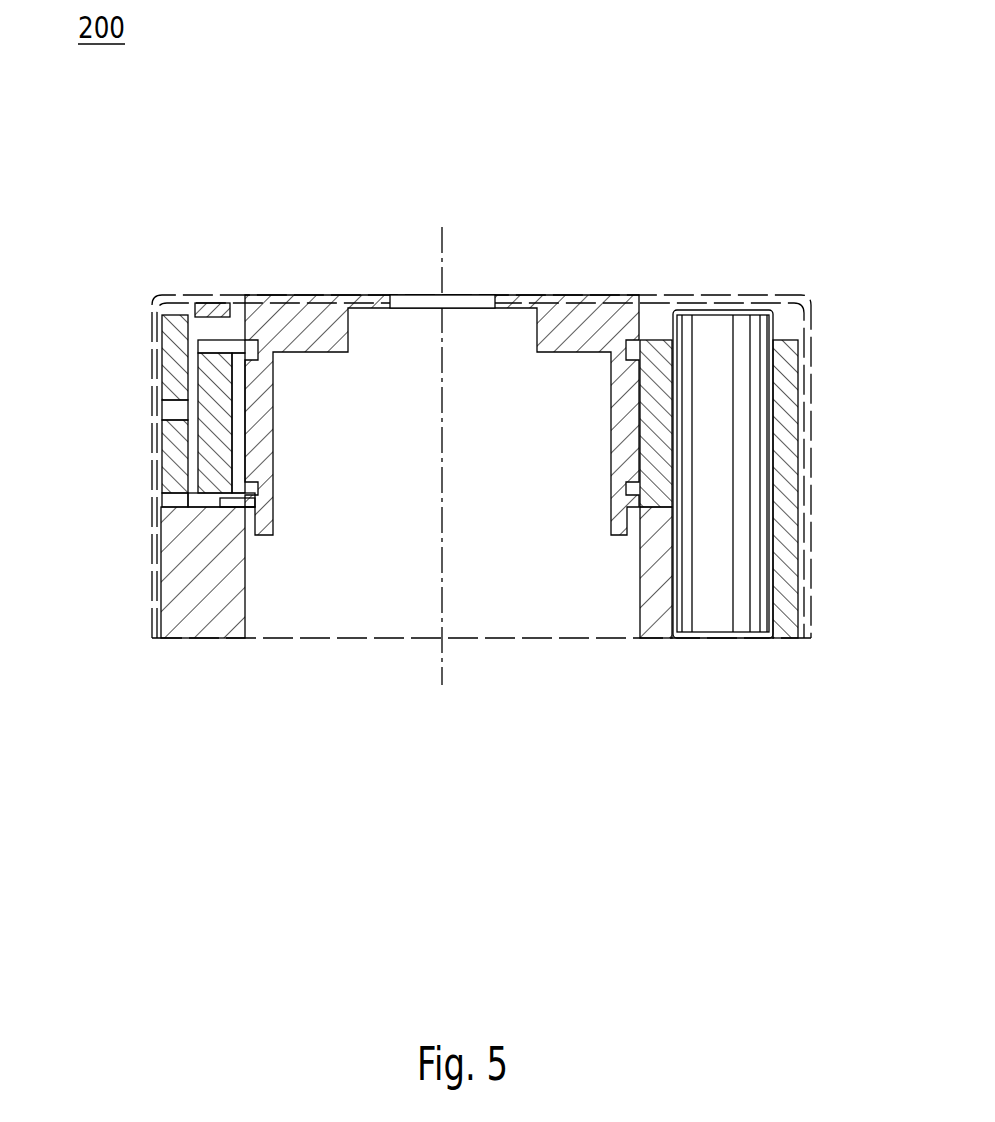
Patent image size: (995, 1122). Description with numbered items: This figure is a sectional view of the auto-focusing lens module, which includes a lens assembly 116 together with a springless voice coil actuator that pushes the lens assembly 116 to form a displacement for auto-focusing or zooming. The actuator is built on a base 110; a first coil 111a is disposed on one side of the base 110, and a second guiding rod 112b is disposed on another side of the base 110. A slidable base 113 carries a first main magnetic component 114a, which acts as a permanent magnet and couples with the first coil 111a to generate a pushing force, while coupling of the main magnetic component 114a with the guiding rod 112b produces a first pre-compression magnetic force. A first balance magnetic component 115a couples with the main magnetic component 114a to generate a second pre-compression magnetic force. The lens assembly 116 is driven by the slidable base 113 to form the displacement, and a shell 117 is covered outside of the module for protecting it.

The base 110 is at (190, 573).
The first coil 111a is at (177, 458).
The second guiding rod 112b is at (722, 330).
The slidable base 113 is at (793, 365).
The first main magnetic component 114a is at (210, 377).
The first balance magnetic component 115a is at (216, 310).
The lens assembly 116 is at (323, 310).
The shell 117 is at (662, 297).